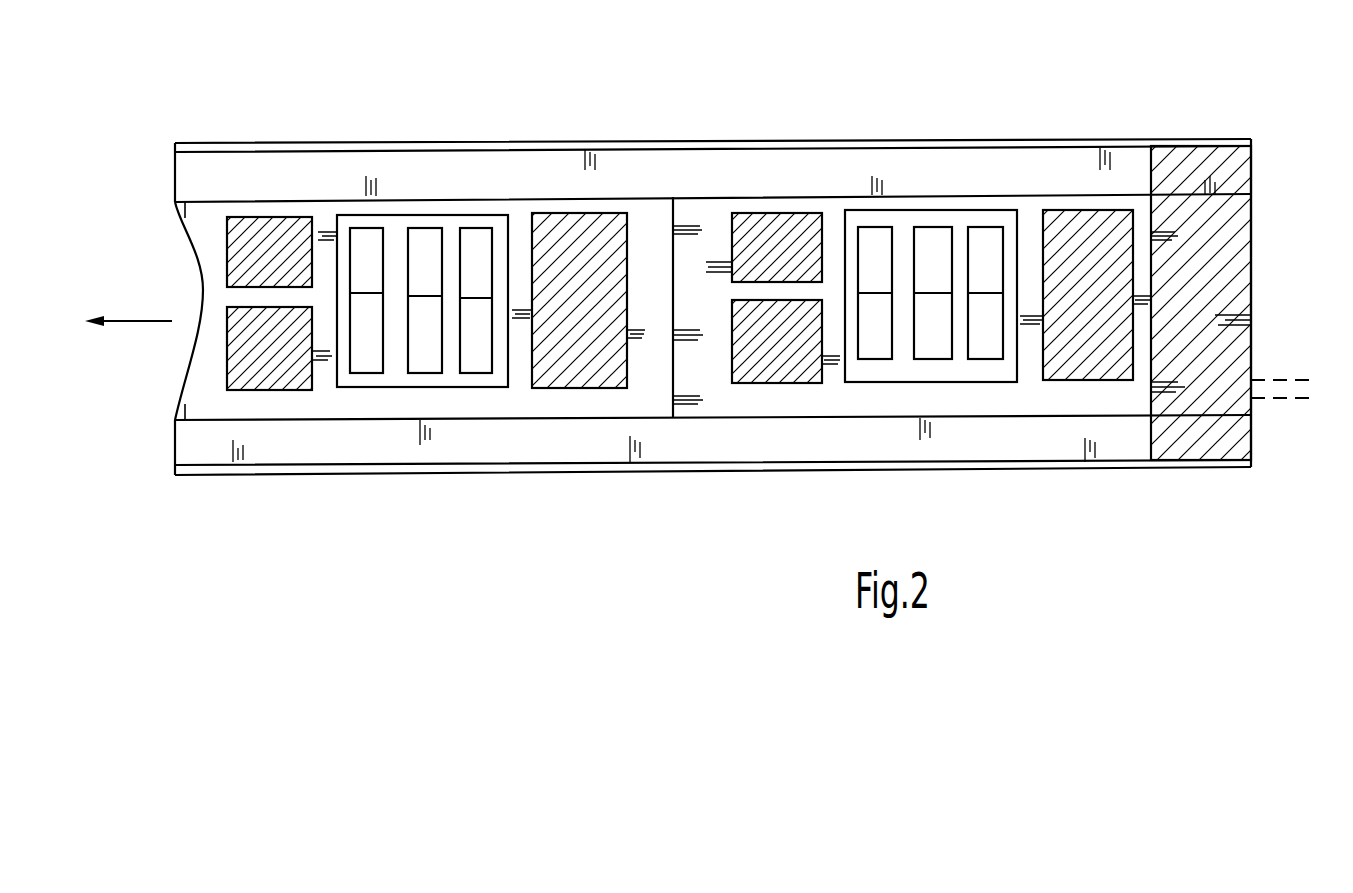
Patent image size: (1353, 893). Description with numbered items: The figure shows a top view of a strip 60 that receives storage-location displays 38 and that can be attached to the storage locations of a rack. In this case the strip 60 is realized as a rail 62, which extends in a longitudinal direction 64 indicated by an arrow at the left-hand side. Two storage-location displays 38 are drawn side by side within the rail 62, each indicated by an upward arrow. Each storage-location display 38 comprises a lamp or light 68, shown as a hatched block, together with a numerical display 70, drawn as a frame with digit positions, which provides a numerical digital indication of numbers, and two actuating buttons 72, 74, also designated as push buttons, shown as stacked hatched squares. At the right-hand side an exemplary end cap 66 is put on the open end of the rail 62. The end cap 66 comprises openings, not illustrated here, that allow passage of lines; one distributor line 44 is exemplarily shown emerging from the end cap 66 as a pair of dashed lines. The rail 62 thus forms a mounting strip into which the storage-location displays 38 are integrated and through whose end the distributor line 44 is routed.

The storage-location display 38 is at (471, 402).
The distributor line 44 is at (1286, 379).
The strip 60 is at (966, 128).
The rail 62 is at (420, 141).
The longitudinal direction 64 is at (124, 318).
The end cap 66 is at (1255, 240).
The lamp 68 is at (566, 388).
The numerical display 70 is at (437, 215).
The actuating button 72 is at (258, 217).
The actuating button 74 is at (258, 390).